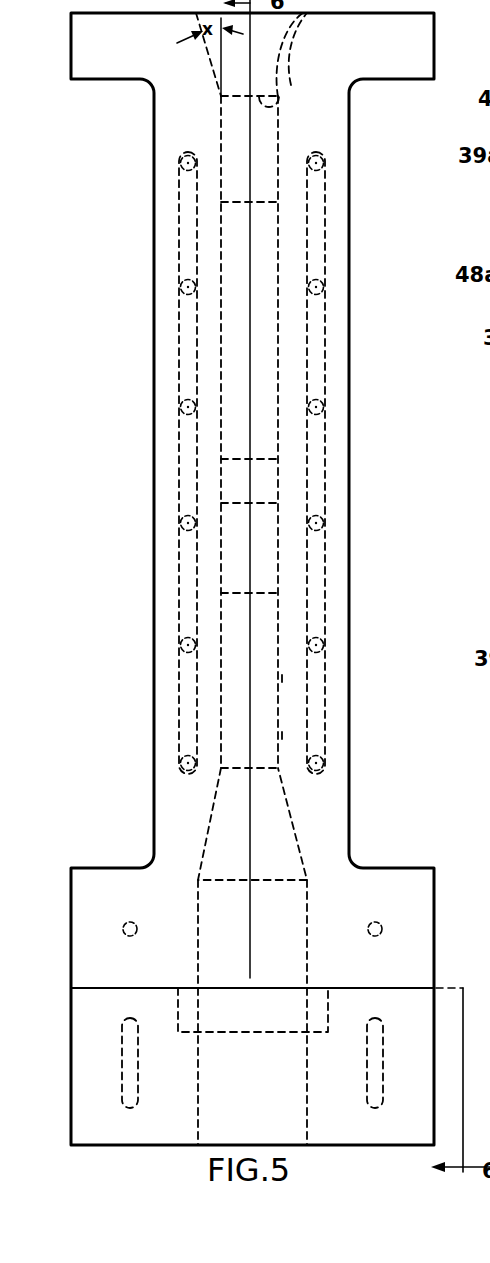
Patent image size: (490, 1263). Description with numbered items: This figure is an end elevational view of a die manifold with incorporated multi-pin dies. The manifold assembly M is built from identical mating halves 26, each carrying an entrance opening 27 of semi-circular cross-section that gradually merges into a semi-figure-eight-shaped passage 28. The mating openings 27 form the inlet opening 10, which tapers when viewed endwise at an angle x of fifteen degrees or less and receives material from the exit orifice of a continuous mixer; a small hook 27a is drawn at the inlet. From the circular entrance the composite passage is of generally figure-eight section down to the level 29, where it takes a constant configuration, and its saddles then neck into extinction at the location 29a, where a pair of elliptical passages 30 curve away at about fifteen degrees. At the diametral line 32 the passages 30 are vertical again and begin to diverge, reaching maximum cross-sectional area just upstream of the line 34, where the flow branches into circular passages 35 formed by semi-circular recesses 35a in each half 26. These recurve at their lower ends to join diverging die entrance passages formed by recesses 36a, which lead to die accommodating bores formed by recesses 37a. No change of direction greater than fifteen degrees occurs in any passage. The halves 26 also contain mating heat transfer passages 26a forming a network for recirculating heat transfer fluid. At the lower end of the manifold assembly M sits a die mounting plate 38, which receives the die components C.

The inlet opening 10 is at (209, 60).
The mating halves 26 is at (165, 360).
The heat transfer passages 26a is at (197, 553).
The entrance opening 27 is at (292, 60).
The hook 27a is at (285, 100).
The semi-figure-eight-shaped passage 28 is at (282, 121).
The level 29 is at (247, 97).
The location 29a is at (242, 202).
The passages of elliptical cross-section 30 is at (282, 237).
The diametral line 32 is at (243, 469).
The line 34 is at (268, 592).
The passages 35 is at (282, 680).
The semi-circular section recesses 35a is at (282, 738).
The semi-circular section recesses 36a is at (295, 836).
The semi-circular section recesses 37a is at (308, 907).
The die mounting plate 38 is at (80, 1027).
The manifold assembly M is at (350, 263).
The die components C is at (319, 996).